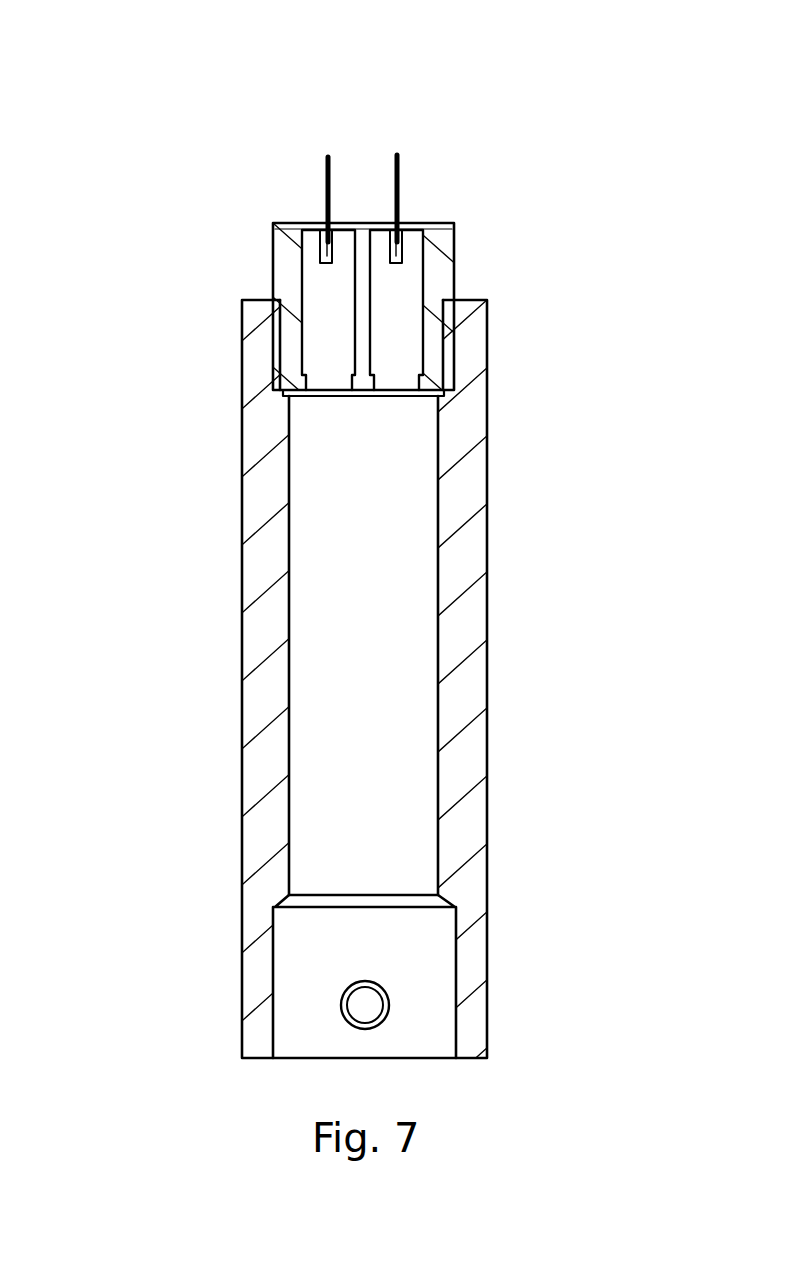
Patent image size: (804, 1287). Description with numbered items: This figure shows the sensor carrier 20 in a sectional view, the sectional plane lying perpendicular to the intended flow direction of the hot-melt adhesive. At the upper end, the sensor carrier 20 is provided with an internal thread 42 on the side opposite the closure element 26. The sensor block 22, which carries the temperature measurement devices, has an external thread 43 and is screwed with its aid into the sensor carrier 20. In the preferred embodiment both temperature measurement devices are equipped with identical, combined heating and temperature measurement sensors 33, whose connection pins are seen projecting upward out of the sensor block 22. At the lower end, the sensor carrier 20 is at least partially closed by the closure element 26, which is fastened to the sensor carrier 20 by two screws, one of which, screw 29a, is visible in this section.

The sensor carrier 20 is at (462, 417).
The sensor block 22 is at (455, 245).
The closure element 26 is at (432, 1042).
The screw 29a is at (360, 1004).
The combined heating and temperature measurement sensor 33 is at (327, 160).
The internal thread 42 is at (450, 337).
The external thread 43 is at (455, 277).